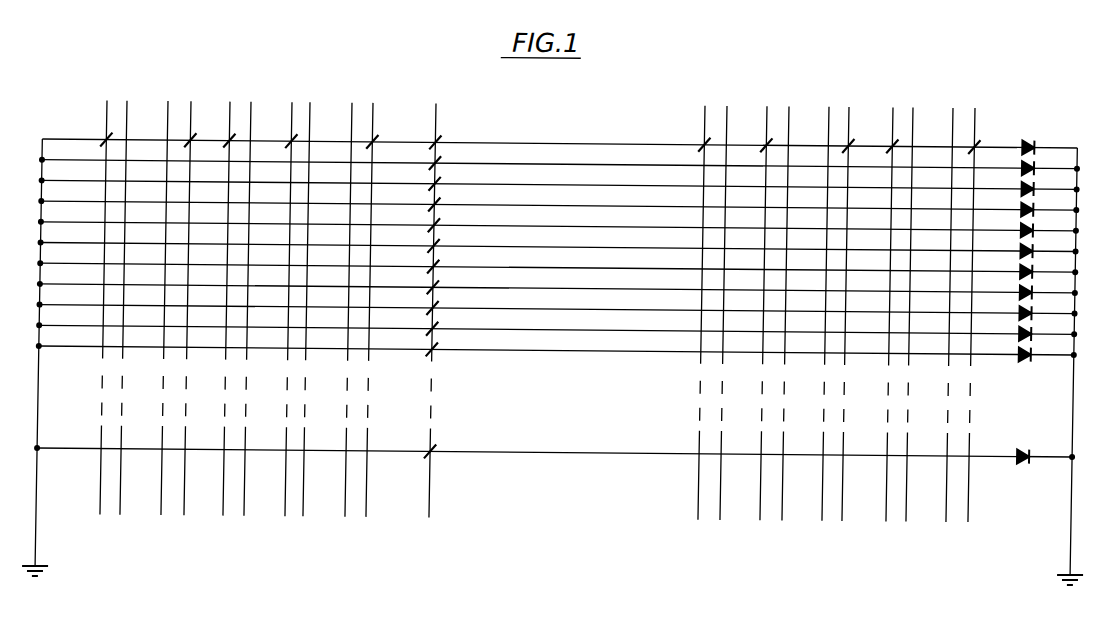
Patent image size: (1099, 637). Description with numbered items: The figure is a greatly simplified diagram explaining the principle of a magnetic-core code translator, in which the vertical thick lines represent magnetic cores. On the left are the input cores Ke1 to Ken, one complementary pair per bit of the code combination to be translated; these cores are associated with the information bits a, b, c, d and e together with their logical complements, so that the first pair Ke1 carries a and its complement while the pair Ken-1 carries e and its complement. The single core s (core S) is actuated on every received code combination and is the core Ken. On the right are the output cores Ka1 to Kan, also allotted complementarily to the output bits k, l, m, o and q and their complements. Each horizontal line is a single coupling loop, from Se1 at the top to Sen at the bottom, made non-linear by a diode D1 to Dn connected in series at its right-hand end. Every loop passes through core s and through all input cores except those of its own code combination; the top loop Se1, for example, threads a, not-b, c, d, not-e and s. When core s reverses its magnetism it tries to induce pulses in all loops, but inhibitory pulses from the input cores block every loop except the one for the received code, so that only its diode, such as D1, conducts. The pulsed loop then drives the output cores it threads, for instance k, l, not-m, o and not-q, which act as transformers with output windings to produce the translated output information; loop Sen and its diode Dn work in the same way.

The coupling loop Se1 is at (560, 139).
The coupling loop Sen is at (566, 449).
The diode D1 is at (1029, 134).
The diode Dn is at (1026, 469).
The input core Ke1 is at (105, 300).
The input core Ken-1 is at (379, 304).
The input core Ken is at (450, 306).
The output core Ka1 is at (710, 306).
The output core Kan is at (974, 310).
The information bit a is at (133, 64).
The information bit b is at (197, 64).
The information bit c is at (257, 64).
The information bit d is at (316, 64).
The information bit e is at (379, 64).
The core S s is at (432, 294).
The output bit k is at (733, 64).
The output bit l is at (795, 64).
The output bit m is at (856, 64).
The output bit o is at (919, 64).
The output bit q is at (981, 64).